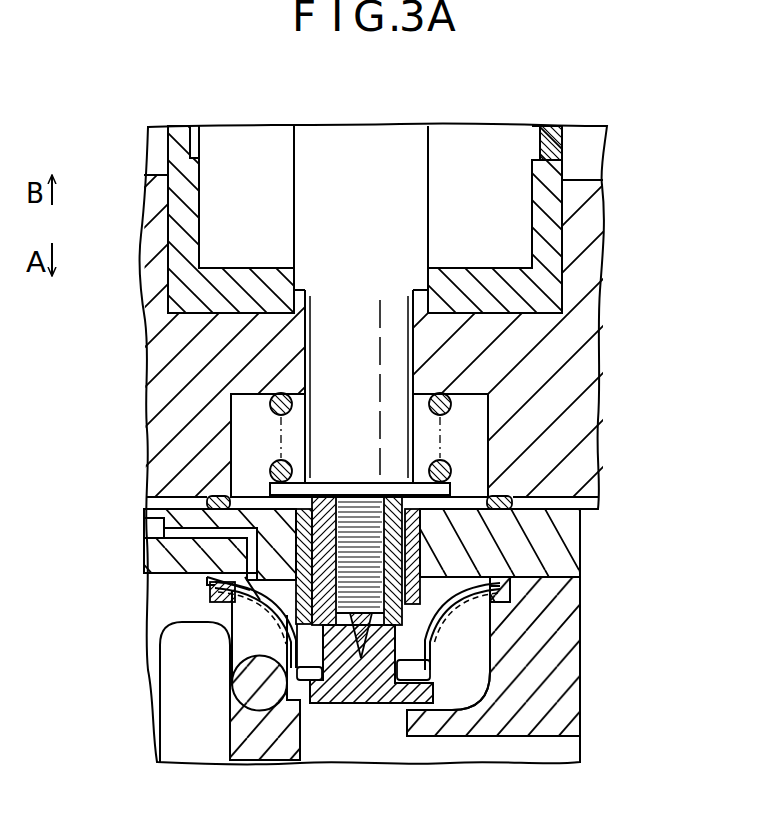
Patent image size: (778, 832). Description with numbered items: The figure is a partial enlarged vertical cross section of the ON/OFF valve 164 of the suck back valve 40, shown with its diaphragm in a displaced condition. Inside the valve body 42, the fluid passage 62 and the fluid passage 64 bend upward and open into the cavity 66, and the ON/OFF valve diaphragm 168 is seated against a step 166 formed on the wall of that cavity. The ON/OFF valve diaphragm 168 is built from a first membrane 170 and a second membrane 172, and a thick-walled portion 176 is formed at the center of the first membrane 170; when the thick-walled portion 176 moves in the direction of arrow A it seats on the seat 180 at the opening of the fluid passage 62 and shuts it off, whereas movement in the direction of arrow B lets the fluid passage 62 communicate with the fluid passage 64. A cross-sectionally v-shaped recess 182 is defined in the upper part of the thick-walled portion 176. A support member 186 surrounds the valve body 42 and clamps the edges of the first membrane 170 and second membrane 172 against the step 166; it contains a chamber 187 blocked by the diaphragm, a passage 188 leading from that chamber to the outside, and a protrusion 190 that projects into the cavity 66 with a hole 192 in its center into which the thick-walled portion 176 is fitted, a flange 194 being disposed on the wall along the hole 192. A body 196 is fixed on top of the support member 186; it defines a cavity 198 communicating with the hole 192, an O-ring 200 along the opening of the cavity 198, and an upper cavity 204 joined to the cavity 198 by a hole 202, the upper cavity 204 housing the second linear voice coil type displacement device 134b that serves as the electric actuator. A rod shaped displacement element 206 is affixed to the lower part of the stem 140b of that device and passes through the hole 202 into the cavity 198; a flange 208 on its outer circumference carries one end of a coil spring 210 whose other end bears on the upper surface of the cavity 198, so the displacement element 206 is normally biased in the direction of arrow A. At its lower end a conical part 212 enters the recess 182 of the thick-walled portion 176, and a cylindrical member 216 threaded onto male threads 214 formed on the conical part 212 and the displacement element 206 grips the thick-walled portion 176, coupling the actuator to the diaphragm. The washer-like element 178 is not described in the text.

The suck back valve 40 is at (610, 113).
The second linear voice coil type displacement device 134b is at (576, 167).
The cavity 204 is at (556, 200).
The ON/OFF valve 164 is at (606, 272).
The hole 202 is at (402, 344).
The body 196 is at (575, 360).
The cavity 198 is at (486, 413).
The O-ring 200 is at (512, 497).
The flange 194 is at (525, 510).
The support member 186 is at (566, 545).
The hole 192 is at (452, 579).
The protrusion 190 is at (449, 628).
The second membrane 172 is at (440, 648).
The washer 178 is at (445, 681).
The first membrane 170 is at (434, 706).
The fluid passage 62 is at (570, 745).
The displacement element 206 is at (330, 355).
The coil spring 210 is at (275, 405).
The flange 208 is at (275, 488).
The cylindrical member 216 is at (210, 500).
The passage 188 is at (150, 525).
The male threads 214 is at (240, 540).
The chamber 187 is at (245, 596).
The valve body 42 is at (165, 611).
The step 166 is at (215, 605).
The fluid passage 64 is at (165, 746).
The cavity 66 is at (225, 760).
The seat 180 is at (295, 712).
The conical part 212 is at (340, 695).
The v-shaped recess 182 is at (347, 665).
The thick-walled portion 176 is at (390, 712).
The ON/OFF valve diaphragm 168 is at (398, 714).
The stem 140b is at (352, 155).